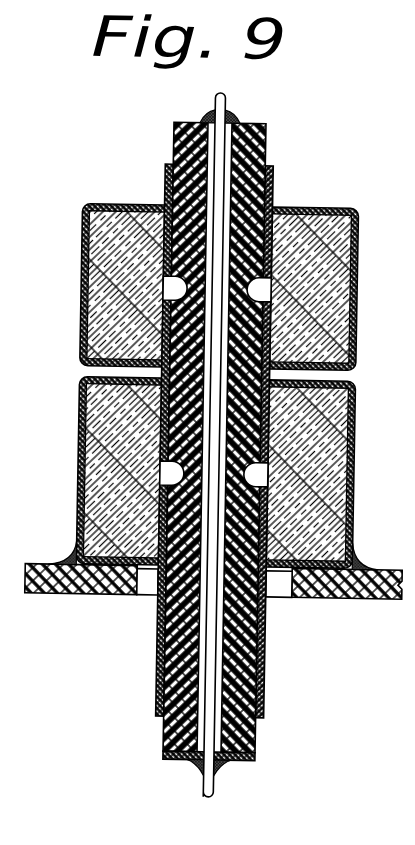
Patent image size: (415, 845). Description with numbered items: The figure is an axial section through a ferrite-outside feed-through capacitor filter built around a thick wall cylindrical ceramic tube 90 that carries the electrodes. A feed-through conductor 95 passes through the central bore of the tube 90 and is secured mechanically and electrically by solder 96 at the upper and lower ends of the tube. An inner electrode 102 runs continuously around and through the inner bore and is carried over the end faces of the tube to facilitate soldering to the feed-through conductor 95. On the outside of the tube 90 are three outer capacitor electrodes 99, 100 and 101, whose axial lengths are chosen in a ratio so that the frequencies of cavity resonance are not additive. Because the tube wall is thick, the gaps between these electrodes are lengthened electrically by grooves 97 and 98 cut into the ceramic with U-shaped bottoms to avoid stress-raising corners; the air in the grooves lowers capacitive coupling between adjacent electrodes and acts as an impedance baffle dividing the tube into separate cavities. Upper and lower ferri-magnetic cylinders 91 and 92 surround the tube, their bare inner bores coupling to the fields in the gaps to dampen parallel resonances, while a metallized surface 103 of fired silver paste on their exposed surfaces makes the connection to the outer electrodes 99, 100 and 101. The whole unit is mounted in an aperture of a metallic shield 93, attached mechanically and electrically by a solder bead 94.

The thick wall cylindrical ceramic tube 90 is at (186, 144).
The upper ferri-magnetic cylinder 91 is at (96, 244).
The lower ferri-magnetic cylinder 92 is at (105, 416).
The metallic shield 93 is at (97, 587).
The solder bead 94 is at (80, 556).
The feed-through conductor 95 is at (215, 97).
The solder 96 is at (210, 120).
The groove 97 is at (273, 469).
The groove 98 is at (253, 291).
The outer capacitor electrode 99 is at (270, 504).
The outer capacitor electrode 100 is at (276, 327).
The outer capacitor electrode 101 is at (276, 183).
The inner electrode 102 is at (232, 620).
The metallized surface 103 is at (84, 484).